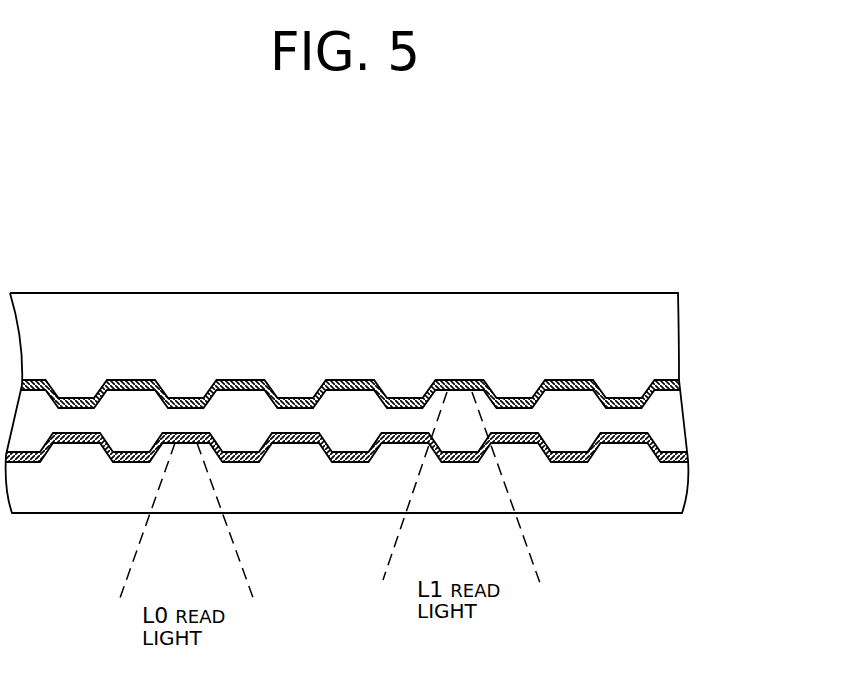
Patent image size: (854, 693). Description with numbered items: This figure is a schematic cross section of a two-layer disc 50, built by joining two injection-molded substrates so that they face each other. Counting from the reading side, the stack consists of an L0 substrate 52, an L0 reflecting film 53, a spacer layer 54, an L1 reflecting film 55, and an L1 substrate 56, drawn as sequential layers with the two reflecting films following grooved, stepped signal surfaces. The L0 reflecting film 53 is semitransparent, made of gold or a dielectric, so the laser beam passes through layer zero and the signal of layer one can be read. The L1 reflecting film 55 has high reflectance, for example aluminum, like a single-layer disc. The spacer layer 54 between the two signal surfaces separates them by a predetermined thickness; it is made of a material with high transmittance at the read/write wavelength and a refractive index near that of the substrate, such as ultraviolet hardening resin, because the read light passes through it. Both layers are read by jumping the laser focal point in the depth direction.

The 2-layer disc 50 is at (165, 248).
The L0 substrate 52 is at (683, 490).
The L0 reflecting film 53 is at (687, 460).
The spacer layer 54 is at (680, 423).
The L1 reflecting film 55 is at (678, 390).
The L1 substrate 56 is at (672, 345).